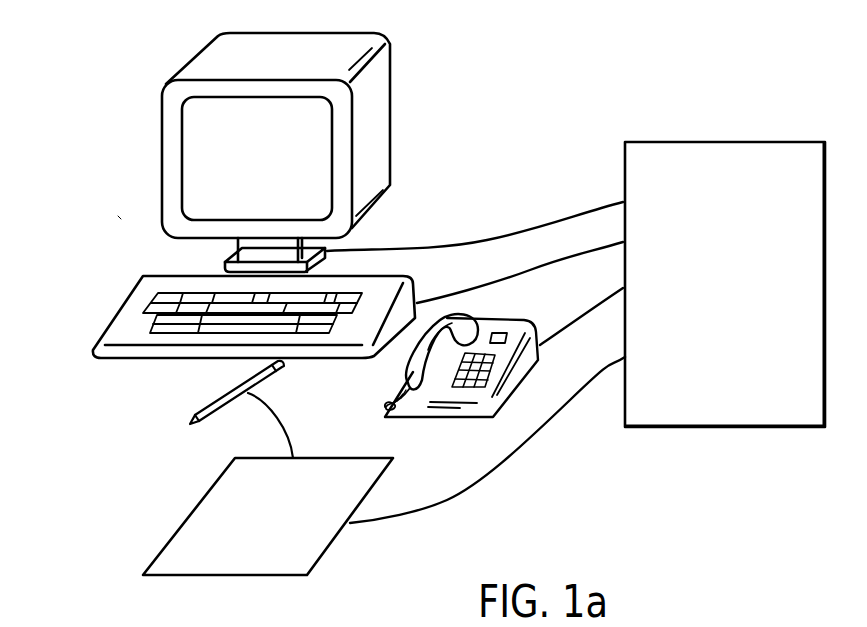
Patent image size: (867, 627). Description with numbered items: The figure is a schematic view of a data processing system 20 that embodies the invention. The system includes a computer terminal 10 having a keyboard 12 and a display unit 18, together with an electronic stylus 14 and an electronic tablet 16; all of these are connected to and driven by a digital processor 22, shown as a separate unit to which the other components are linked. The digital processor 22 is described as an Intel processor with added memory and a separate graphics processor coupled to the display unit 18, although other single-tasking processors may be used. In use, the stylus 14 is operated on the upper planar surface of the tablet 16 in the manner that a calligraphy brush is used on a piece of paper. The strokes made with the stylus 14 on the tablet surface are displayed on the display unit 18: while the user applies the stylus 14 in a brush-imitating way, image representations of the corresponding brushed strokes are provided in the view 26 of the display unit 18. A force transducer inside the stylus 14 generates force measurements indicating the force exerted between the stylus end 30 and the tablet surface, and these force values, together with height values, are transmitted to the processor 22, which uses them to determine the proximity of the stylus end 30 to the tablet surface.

The computer terminal 10 is at (122, 220).
The keyboard 12 is at (112, 313).
The electronic stylus 14 is at (213, 396).
The electronic tablet 16 is at (291, 544).
The display unit 18 is at (391, 90).
The data processing system 20 is at (578, 462).
The digital processor 22 is at (743, 182).
The view 26 is at (294, 189).
The stylus end 30 is at (192, 427).